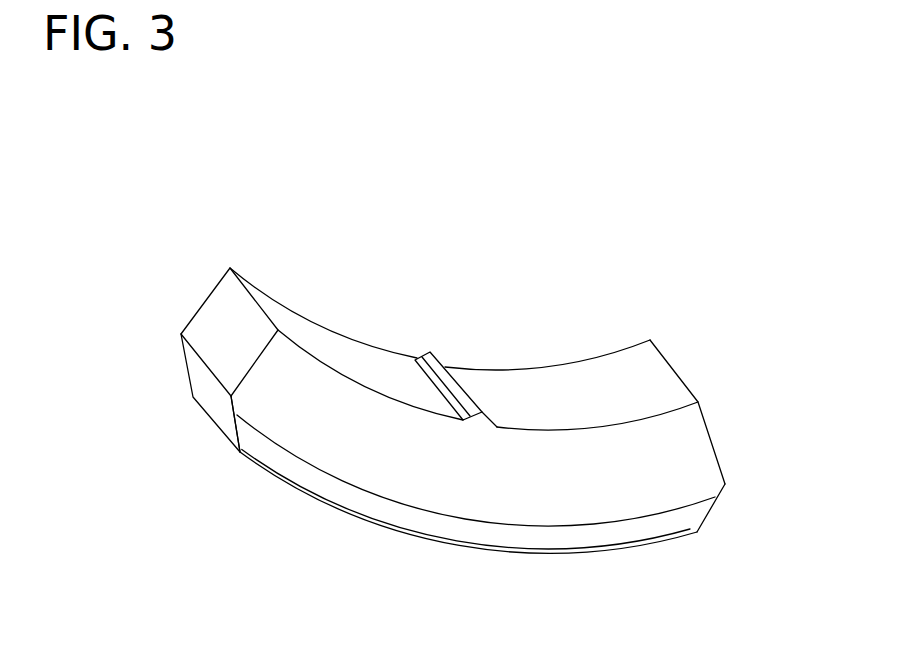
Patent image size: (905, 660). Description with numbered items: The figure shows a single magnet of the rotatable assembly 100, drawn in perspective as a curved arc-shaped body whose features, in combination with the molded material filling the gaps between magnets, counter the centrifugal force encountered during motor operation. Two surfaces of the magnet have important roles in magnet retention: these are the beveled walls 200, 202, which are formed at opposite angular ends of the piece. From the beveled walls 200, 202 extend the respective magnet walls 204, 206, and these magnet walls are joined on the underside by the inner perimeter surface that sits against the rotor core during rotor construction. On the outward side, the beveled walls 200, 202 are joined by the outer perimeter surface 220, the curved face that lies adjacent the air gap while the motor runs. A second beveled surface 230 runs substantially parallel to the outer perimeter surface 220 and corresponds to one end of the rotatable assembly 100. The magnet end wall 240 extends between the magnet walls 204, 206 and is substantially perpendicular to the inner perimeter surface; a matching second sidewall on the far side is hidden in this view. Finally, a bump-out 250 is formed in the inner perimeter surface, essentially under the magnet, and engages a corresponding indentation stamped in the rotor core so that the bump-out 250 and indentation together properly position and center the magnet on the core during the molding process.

The rotatable assembly 100 is at (330, 343).
The beveled wall 200 is at (213, 396).
The beveled wall 202 is at (707, 513).
The magnet wall 204 is at (230, 333).
The magnet wall 206 is at (707, 423).
The outer perimeter surface 220 is at (363, 522).
The second beveled surface 230 is at (635, 532).
The magnet end wall 240 is at (510, 482).
The bump-out 250 is at (483, 397).